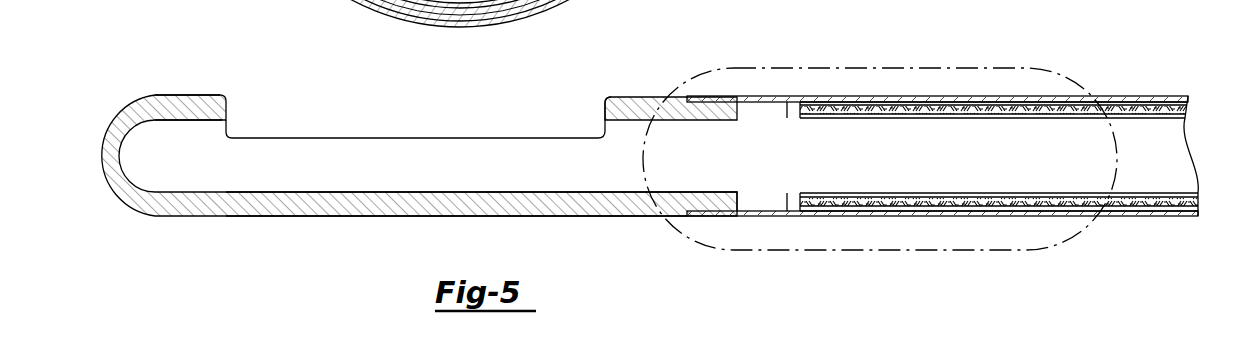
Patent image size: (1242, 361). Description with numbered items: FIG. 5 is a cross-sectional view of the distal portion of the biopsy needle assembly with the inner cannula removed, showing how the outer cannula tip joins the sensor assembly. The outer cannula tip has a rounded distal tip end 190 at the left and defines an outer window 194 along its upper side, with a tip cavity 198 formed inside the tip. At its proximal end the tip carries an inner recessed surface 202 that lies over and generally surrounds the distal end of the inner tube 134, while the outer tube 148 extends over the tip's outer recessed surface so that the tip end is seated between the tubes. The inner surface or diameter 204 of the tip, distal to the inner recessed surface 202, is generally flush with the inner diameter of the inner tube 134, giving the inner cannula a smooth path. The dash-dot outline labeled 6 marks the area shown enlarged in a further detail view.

The area of FIG. 6 is at (867, 67).
The inner tube 134 is at (913, 193).
The outer tube 148 is at (713, 96).
The rounded distal tip end 190 is at (95, 168).
The outer window 194 is at (358, 137).
The tip cavity 198 is at (170, 136).
The inner recessed surface 202 is at (787, 212).
The inner surface or diameter 204 is at (378, 191).